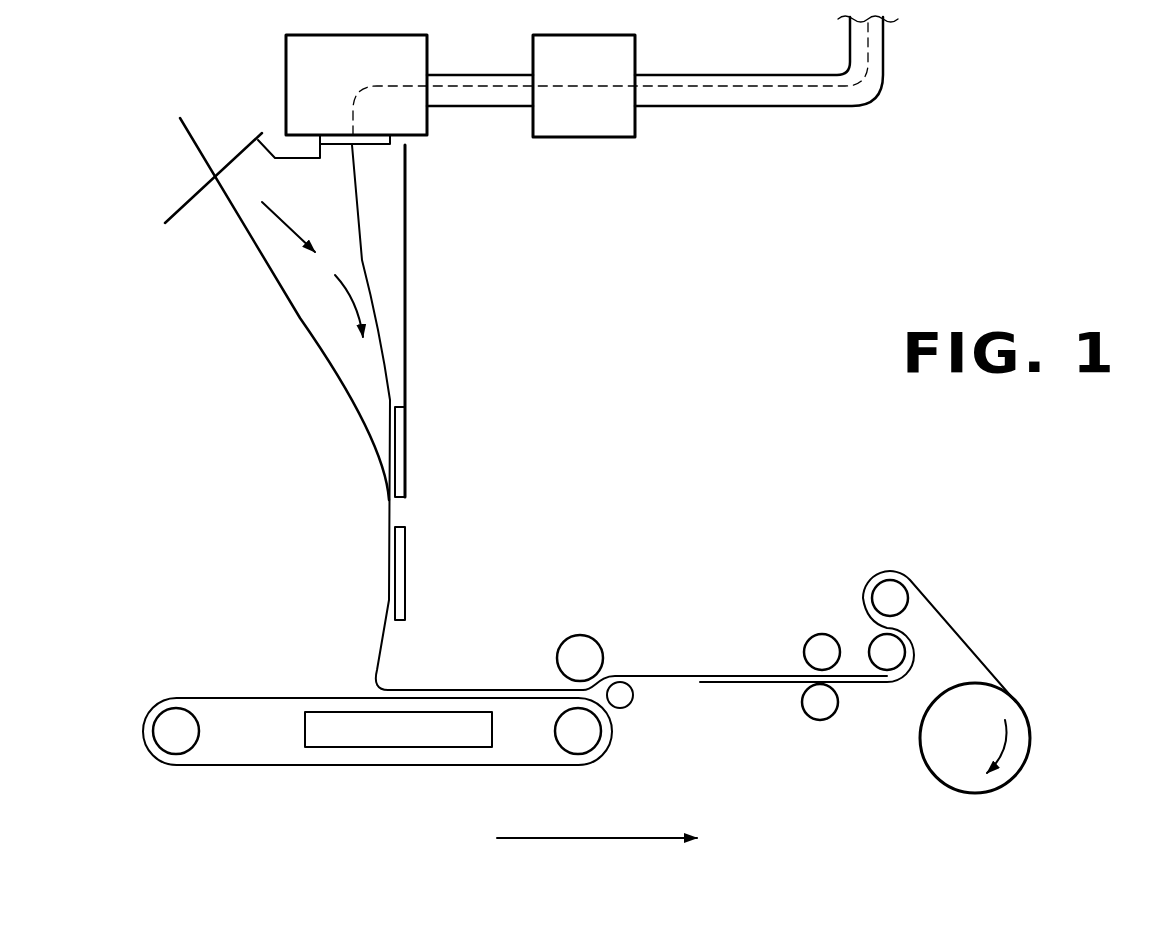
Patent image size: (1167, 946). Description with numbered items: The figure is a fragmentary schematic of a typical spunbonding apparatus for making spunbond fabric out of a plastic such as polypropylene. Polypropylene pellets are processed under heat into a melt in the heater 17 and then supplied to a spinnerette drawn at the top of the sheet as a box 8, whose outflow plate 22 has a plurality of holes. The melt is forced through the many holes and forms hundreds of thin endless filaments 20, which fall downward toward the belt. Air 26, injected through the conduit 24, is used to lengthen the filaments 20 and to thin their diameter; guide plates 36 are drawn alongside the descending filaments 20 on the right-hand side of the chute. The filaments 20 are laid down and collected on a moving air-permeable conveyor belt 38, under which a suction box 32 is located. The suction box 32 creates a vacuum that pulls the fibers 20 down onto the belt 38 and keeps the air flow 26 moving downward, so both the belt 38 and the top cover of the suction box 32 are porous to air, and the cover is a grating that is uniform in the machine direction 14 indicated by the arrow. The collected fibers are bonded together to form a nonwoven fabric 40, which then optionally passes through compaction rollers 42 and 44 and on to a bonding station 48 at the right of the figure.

The extruder die / supply box 8 is at (286, 50).
The heater 17 is at (638, 52).
The air 26 is at (250, 188).
The outflow plate 22 is at (305, 190).
The conduit 24 is at (353, 160).
The filaments 20 is at (360, 248).
The guide plates 36 is at (390, 552).
The conveyor belt 38 is at (222, 697).
The suction box 32 is at (383, 745).
The nonwoven fabric 40 is at (430, 692).
The compaction roller 42 is at (603, 647).
The compaction roller 44 is at (605, 738).
The bonding station 48 is at (802, 673).
The machine direction 14 is at (597, 838).